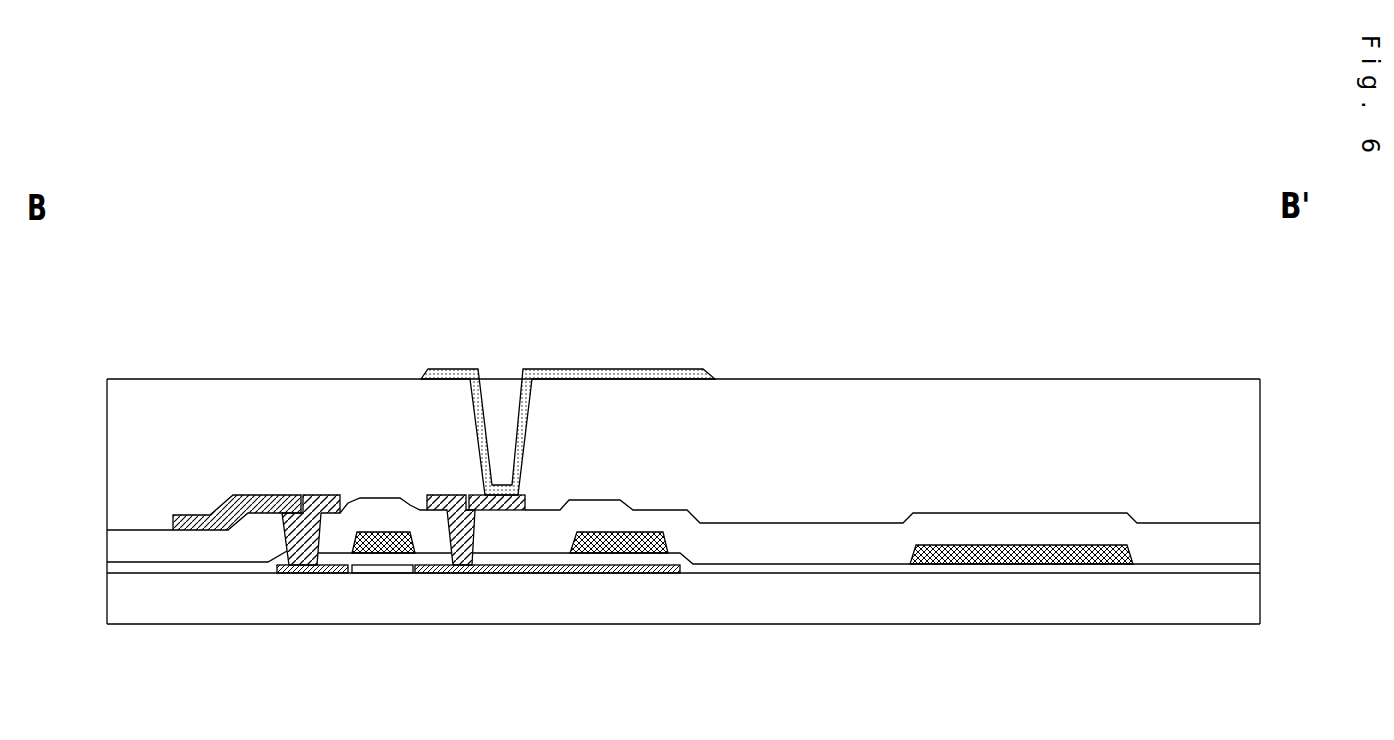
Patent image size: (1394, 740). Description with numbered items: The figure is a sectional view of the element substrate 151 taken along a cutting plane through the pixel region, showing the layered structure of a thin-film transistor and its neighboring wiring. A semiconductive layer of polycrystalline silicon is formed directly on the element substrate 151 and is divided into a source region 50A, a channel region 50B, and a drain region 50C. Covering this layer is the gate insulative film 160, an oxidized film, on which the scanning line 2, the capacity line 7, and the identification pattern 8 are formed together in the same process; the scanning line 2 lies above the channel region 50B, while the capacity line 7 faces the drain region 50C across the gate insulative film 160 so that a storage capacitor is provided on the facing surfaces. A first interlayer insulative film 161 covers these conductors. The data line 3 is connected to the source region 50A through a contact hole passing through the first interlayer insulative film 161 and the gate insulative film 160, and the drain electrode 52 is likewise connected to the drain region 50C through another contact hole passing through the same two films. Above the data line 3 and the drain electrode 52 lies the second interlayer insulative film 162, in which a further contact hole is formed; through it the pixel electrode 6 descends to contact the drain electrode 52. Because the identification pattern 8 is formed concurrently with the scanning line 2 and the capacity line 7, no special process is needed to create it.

The scanning line 2 is at (377, 530).
The data line 3 is at (203, 515).
The pixel electrode 6 is at (627, 369).
The capacity line 7 is at (627, 553).
The identification pattern 8 is at (1008, 564).
The drain electrode 52 is at (447, 495).
The source region 50A is at (340, 575).
The channel region 50B is at (387, 575).
The drain region 50C is at (503, 575).
The element substrate 151 is at (1260, 597).
The gate insulative film 160 is at (1260, 565).
The first interlayer insulative film 161 is at (1260, 537).
The second interlayer insulative film 162 is at (1260, 472).